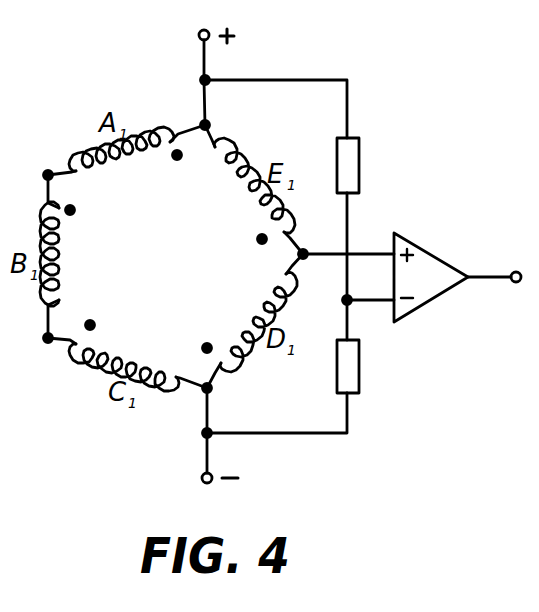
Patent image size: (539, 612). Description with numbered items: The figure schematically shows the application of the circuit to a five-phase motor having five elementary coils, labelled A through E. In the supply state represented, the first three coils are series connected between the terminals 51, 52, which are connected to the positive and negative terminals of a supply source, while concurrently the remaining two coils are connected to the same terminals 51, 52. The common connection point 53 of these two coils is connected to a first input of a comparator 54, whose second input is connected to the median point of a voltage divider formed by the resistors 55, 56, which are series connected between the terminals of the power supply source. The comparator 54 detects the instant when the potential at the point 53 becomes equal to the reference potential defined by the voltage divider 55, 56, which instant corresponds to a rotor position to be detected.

The terminal 51 is at (224, 125).
The terminal 52 is at (226, 400).
The common connection point 53 is at (345, 280).
The comparator 54 is at (432, 256).
The resistor 55 is at (355, 166).
The resistor 56 is at (355, 372).